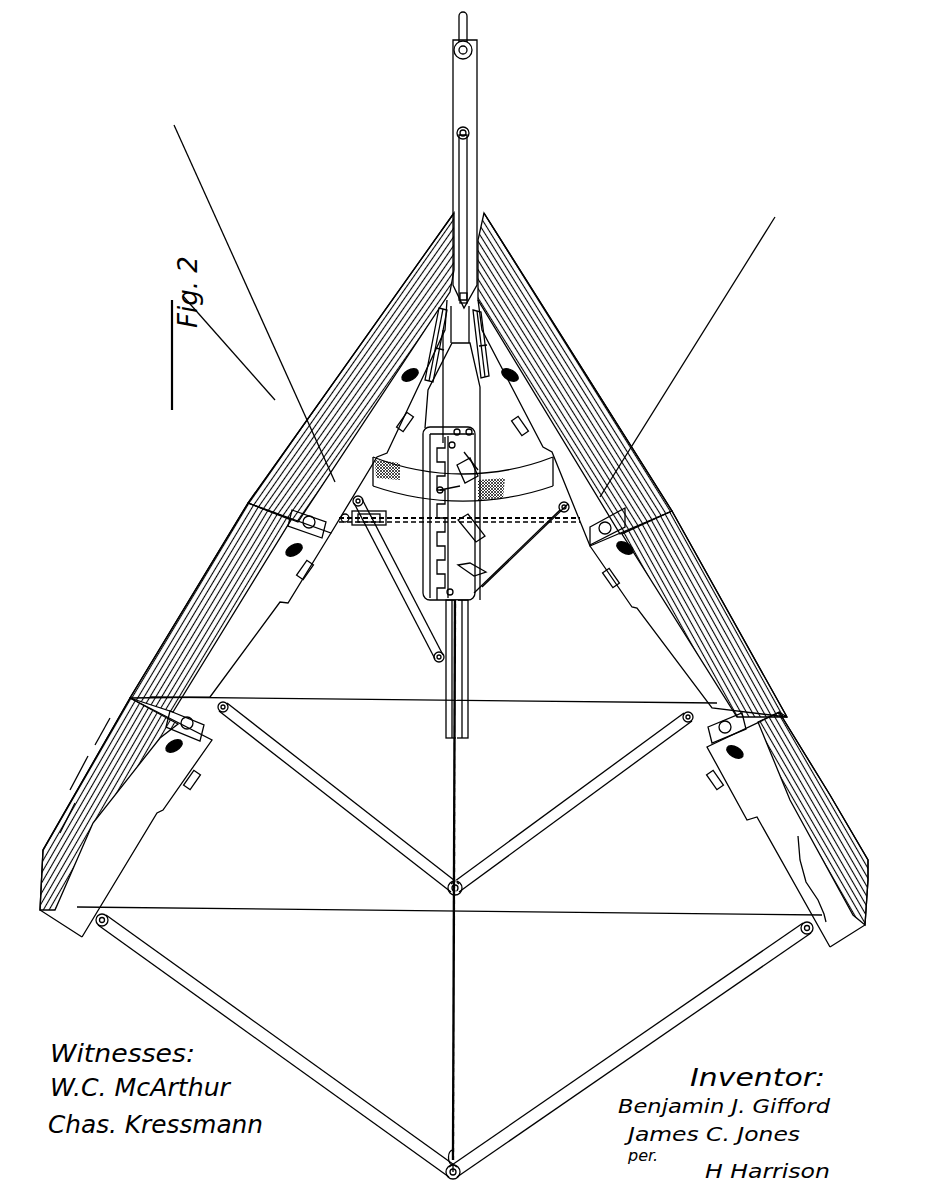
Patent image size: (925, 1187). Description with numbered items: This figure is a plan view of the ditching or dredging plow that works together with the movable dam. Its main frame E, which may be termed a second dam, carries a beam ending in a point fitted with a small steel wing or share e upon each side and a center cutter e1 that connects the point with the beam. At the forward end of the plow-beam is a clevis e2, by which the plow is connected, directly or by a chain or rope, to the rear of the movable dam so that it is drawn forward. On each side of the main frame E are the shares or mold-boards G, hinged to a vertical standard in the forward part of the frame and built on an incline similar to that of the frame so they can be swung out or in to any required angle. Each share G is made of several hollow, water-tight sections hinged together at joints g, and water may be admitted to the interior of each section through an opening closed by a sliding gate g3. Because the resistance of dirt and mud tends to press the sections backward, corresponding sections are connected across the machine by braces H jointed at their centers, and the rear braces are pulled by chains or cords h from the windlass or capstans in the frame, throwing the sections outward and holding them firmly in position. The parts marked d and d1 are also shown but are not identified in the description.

The clevis e2 is at (458, 20).
The main frame E is at (412, 500).
The steel wing or share e is at (454, 513).
The center cutter e1 is at (461, 513).
The share or mold-board G is at (454, 580).
The joint g is at (456, 625).
The gate g3 is at (446, 604).
The tie rods d is at (449, 722).
The bolts d1 is at (456, 555).
The chain or cord h is at (459, 841).
The brace H is at (392, 812).